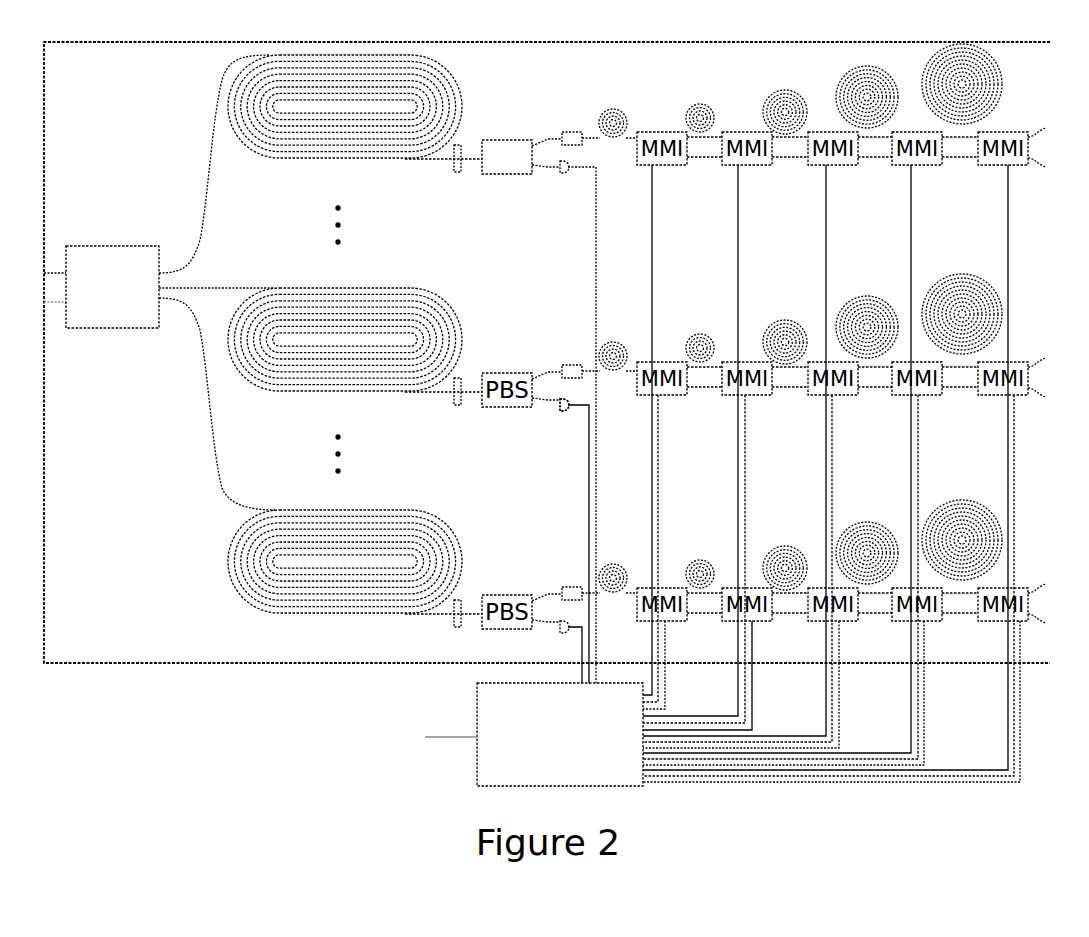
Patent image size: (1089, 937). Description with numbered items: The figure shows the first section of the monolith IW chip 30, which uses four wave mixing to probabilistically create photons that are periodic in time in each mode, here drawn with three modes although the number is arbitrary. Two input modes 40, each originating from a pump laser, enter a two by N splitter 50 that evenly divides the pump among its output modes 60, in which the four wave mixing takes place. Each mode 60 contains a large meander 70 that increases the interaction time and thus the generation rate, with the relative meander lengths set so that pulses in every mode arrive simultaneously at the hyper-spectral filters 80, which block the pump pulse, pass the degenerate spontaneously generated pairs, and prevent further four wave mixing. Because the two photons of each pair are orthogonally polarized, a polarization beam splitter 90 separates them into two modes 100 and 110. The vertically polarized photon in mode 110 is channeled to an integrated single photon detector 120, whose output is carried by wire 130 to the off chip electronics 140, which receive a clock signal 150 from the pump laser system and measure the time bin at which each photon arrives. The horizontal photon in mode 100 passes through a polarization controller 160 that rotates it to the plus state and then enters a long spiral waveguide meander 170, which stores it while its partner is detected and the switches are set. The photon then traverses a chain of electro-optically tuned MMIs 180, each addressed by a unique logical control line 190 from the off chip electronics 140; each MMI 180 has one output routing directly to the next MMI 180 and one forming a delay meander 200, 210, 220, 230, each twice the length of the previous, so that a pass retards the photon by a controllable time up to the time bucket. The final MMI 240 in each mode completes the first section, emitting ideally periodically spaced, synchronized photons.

The monolith IW chip 30 is at (58, 660).
The modes 40 is at (53, 270).
The 2 by N splitter 50 is at (86, 244).
The output modes 60 is at (132, 244).
The meander 70 is at (296, 165).
The hyper-spectral filter 80 is at (455, 177).
The polarization beam splitter 90 is at (505, 138).
The mode 100 is at (539, 139).
The mode 110 is at (540, 171).
The single photon detector 120 is at (572, 176).
The wire 130 is at (570, 413).
The off chip electronics 140 is at (471, 758).
The clock signal 150 is at (416, 737).
The polarization controller 160 is at (573, 130).
The waveguide meander 170 is at (614, 107).
The MMI 180 is at (660, 130).
The logical control lines 190 is at (759, 718).
The delay meander 200 is at (702, 103).
The delay meander 210 is at (786, 89).
The delay meander 220 is at (869, 65).
The delay meander 230 is at (1003, 96).
The final MMI 240 is at (997, 169).